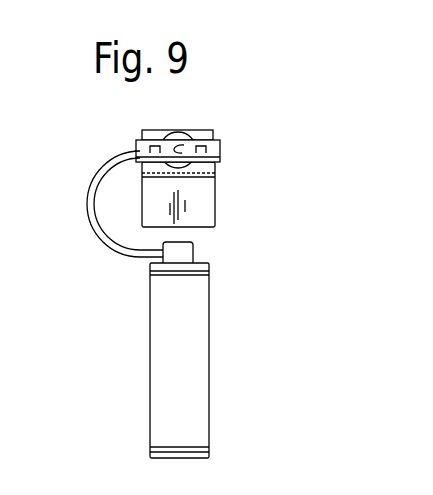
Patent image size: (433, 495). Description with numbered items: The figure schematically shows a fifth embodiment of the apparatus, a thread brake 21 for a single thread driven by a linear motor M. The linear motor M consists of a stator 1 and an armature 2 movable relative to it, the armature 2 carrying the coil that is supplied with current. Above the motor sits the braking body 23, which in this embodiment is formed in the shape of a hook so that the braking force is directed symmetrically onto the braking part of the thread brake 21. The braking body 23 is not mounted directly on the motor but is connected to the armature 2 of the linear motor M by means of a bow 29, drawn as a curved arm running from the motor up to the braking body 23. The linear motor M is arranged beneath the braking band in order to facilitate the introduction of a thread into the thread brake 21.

The stator 1 is at (212, 378).
The armature 2 is at (183, 253).
The thread brake 21 is at (223, 177).
The braking body 23 is at (222, 146).
The bow 29 is at (89, 222).
The linear motor M is at (100, 347).